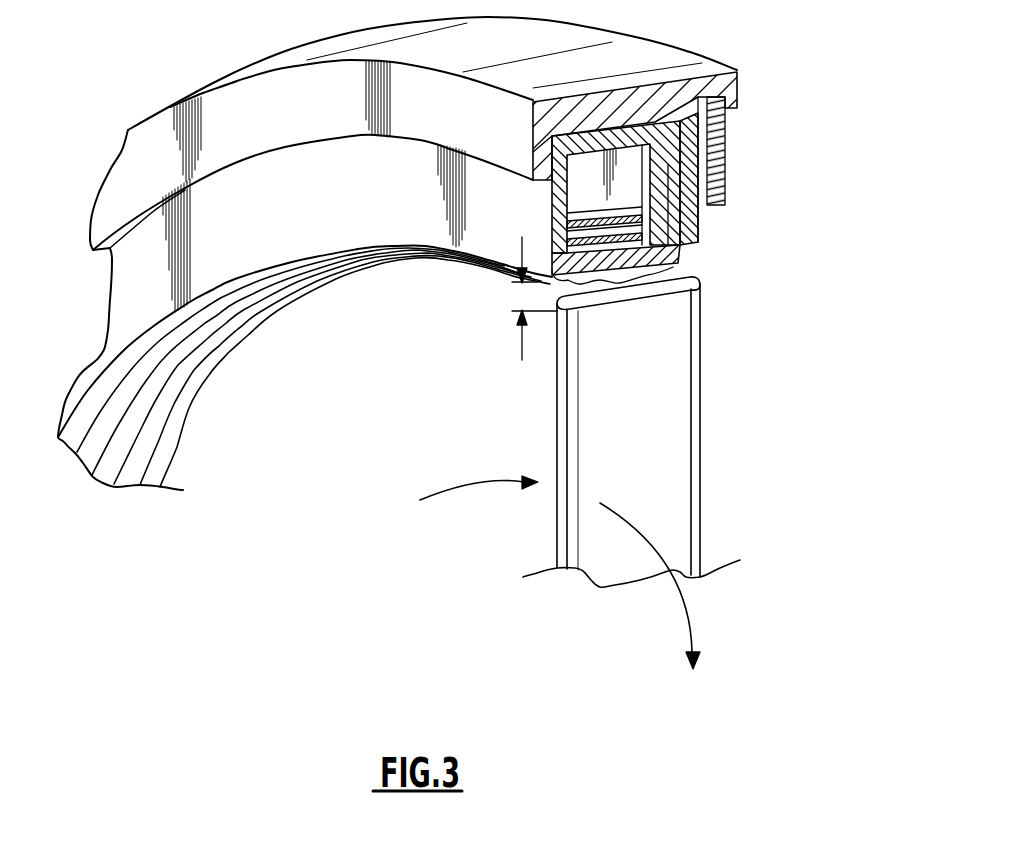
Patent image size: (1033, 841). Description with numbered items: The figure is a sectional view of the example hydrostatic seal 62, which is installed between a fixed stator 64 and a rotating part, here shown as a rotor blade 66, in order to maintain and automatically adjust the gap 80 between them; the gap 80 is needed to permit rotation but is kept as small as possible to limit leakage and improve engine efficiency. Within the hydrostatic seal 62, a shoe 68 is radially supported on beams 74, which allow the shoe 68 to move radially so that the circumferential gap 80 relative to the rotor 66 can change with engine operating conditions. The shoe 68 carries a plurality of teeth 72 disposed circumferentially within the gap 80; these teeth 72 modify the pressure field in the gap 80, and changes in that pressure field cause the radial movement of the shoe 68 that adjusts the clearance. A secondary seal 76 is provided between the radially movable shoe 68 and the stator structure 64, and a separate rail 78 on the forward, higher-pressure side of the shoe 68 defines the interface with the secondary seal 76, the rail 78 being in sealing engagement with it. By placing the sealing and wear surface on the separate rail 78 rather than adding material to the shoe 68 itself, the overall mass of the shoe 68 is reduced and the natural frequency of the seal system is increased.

The hydrostatic seal 62 is at (652, 261).
The stator 64 is at (647, 65).
The rotor blade 66 is at (668, 473).
The shoe 68 is at (582, 282).
The teeth 72 is at (629, 308).
The beams 74 is at (553, 228).
The secondary seal 76 is at (699, 231).
The rail 78 is at (676, 265).
The gap 80 is at (520, 346).